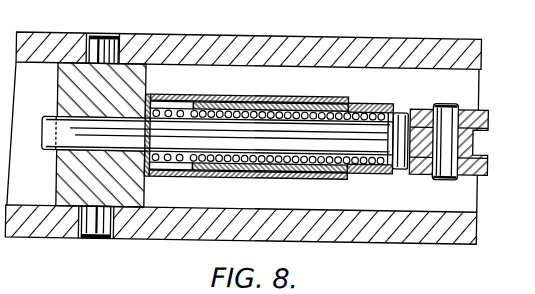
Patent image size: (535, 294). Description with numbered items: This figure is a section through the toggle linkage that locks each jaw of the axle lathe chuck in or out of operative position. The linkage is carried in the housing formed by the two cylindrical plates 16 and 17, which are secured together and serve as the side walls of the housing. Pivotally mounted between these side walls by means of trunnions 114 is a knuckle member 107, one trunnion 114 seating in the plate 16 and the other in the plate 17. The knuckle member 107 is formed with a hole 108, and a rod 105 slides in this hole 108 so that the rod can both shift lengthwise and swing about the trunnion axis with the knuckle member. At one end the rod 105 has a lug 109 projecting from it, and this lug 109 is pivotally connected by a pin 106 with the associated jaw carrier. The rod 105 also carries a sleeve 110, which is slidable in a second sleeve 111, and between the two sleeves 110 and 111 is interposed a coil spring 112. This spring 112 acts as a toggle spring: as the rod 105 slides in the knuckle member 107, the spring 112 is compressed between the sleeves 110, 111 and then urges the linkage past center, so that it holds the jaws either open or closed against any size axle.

The cylindrical plate 16 is at (298, 35).
The cylindrical plate 17 is at (338, 237).
The rod 105 is at (308, 137).
The pin 106 is at (447, 175).
The knuckle member 107 is at (72, 176).
The hole 108 is at (77, 114).
The lug 109 is at (421, 103).
The sleeve 110 is at (367, 102).
The sleeve 111 is at (250, 101).
The coil spring 112 is at (184, 111).
The trunnions 114 is at (119, 43).